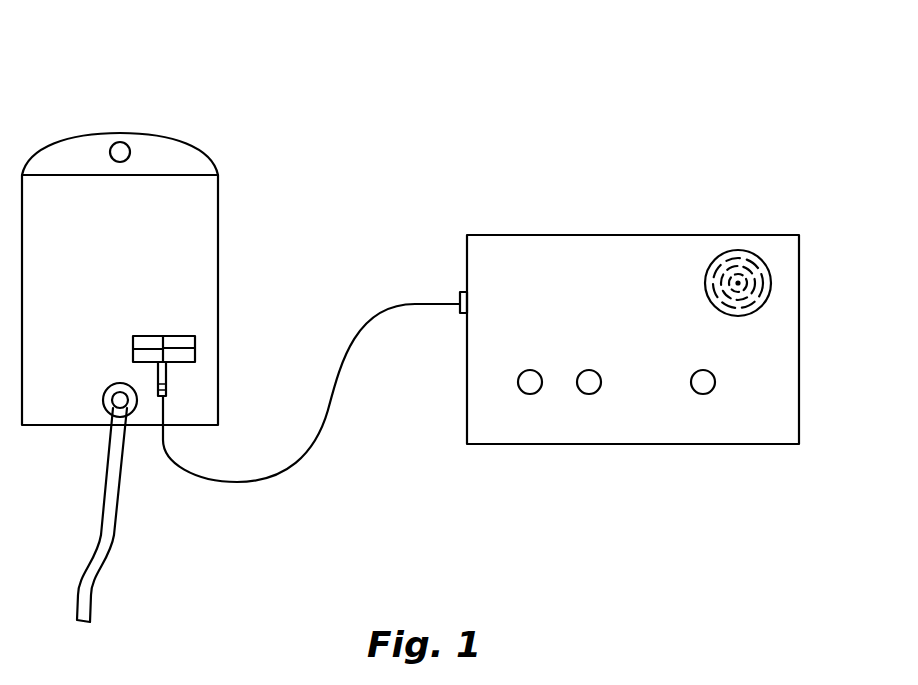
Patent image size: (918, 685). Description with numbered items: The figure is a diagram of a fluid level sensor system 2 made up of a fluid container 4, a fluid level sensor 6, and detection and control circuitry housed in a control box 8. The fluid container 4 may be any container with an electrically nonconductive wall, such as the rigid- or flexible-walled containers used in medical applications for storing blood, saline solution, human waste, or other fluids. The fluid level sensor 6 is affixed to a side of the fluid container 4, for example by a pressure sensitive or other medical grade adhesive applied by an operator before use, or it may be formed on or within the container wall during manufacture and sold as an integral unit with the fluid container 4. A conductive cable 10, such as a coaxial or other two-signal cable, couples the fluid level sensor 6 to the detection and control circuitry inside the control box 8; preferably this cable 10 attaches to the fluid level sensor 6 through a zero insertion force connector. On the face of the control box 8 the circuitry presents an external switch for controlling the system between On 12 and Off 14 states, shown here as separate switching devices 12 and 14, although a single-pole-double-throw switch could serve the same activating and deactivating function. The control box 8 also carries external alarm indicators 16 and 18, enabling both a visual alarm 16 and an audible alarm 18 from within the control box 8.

The fluid level sensor system 2 is at (617, 120).
The fluid container 4 is at (199, 211).
The fluid level sensor 6 is at (195, 350).
The control box 8 is at (670, 252).
The conductive cable 10 is at (307, 458).
The On switching device 12 is at (518, 382).
The Off switching device 14 is at (601, 383).
The visual alarm 16 is at (709, 381).
The audible alarm 18 is at (771, 293).